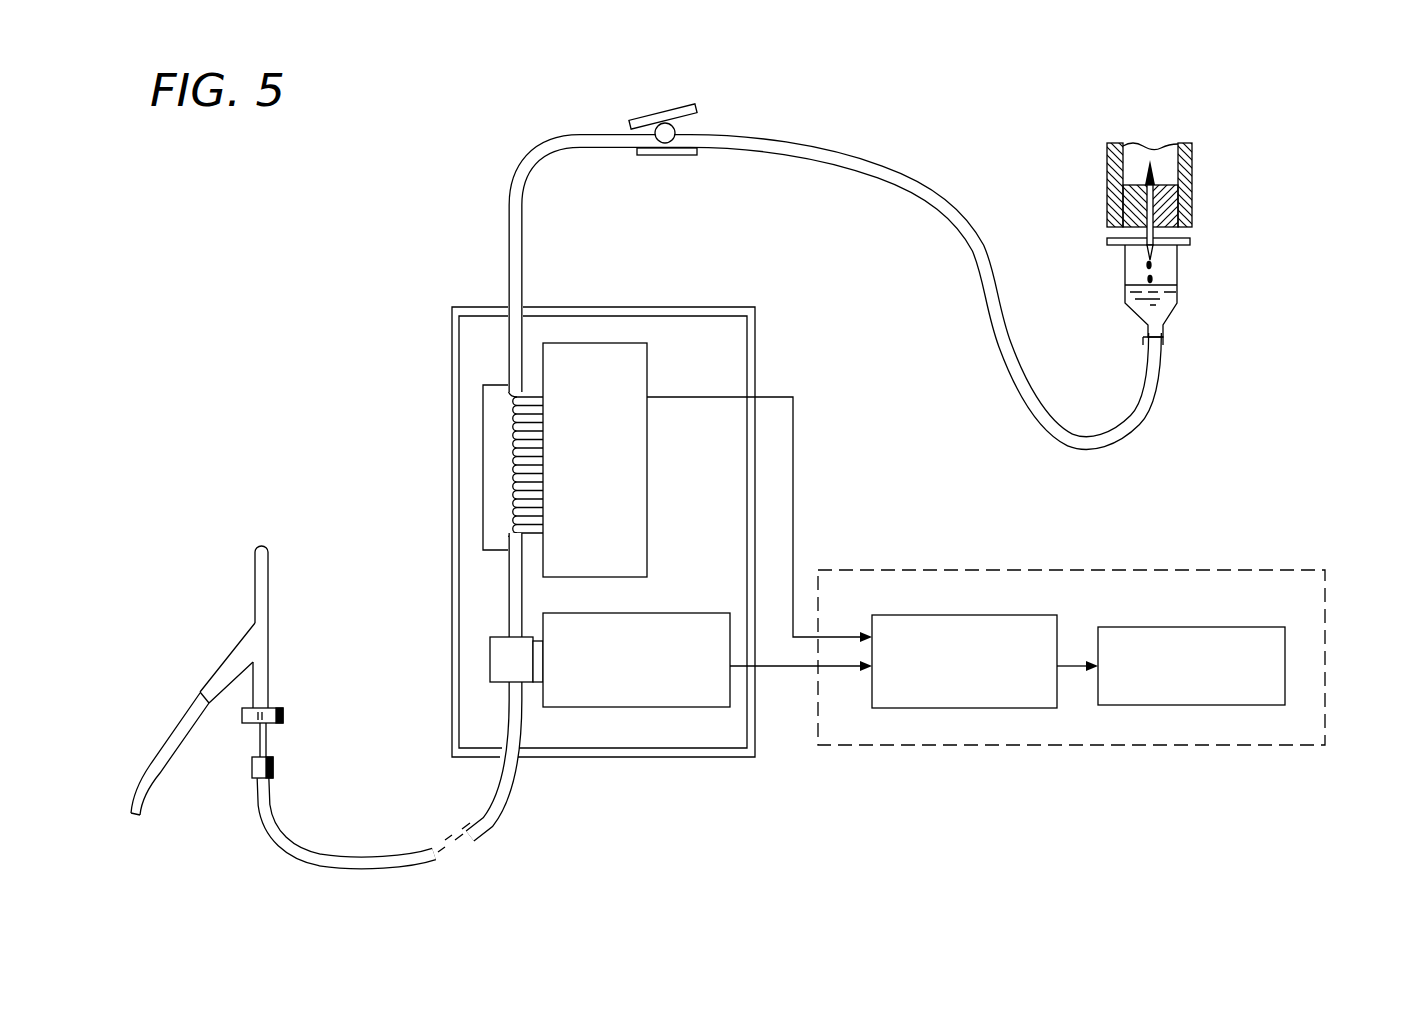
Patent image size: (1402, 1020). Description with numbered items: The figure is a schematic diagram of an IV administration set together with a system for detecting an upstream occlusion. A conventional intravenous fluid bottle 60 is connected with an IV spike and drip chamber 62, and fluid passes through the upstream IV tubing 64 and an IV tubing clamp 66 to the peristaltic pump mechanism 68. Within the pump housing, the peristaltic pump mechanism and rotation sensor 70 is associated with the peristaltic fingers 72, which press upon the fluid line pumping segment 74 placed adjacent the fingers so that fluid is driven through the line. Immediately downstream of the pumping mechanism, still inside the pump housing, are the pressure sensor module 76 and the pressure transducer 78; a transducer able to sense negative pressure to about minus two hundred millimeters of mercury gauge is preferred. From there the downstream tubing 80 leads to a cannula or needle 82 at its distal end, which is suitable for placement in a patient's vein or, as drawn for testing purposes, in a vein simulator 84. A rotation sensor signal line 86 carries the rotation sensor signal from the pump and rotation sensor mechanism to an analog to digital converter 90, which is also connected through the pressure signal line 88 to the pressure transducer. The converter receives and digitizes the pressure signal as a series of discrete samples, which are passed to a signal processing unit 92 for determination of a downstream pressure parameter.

The intravenous fluid bottle 60 is at (1107, 180).
The IV spike and drip chamber 62 is at (1178, 275).
The upstream IV tubing 64 is at (1148, 403).
The IV tubing clamp 66 is at (672, 108).
The peristaltic pump mechanism 68 is at (440, 364).
The peristaltic pump mechanism and rotation sensor 70 is at (647, 487).
The peristaltic fingers 72 is at (516, 455).
The fluid line pumping segment 74 is at (512, 510).
The pressure sensor module 76 is at (490, 662).
The pressure transducer 78 is at (687, 613).
The downstream tubing 80 is at (511, 603).
The cannula or needle 82 is at (266, 742).
The vein simulator 84 is at (253, 590).
The rotation sensor signal line 86 is at (793, 490).
The pressure signal line 88 is at (790, 675).
The analog to digital converter 90 is at (1011, 608).
The signal processing unit 92 is at (1215, 612).